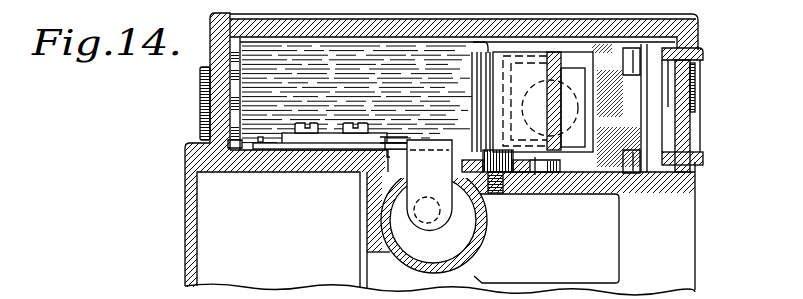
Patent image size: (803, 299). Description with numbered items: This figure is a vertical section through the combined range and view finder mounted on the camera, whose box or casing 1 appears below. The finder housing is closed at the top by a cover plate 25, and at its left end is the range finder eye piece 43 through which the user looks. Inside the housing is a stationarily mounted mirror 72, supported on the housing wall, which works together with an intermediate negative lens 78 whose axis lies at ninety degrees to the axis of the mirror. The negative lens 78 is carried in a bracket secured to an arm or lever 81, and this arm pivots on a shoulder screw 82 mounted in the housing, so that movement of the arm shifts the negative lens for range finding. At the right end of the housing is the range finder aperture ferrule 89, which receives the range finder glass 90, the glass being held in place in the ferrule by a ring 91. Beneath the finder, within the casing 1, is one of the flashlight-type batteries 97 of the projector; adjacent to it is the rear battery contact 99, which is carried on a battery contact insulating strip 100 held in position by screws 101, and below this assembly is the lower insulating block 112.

The box or casing 1 is at (186, 195).
The cover plate 25 is at (437, 29).
The range finder eye piece 43 is at (200, 92).
The mirror 72 is at (555, 115).
The intermediate negative lens 78 is at (567, 97).
The arm or lever 81 is at (530, 163).
The shoulder screw 82 is at (482, 150).
The range finder aperture ferrule 89 is at (701, 59).
The range finder glass 90 is at (680, 128).
The ring 91 is at (674, 157).
The battery 97 is at (455, 230).
The rear battery contact 99 is at (447, 158).
The battery contact insulating strip 100 is at (338, 137).
The screws 101 is at (297, 133).
The lower insulating block 112 is at (304, 148).